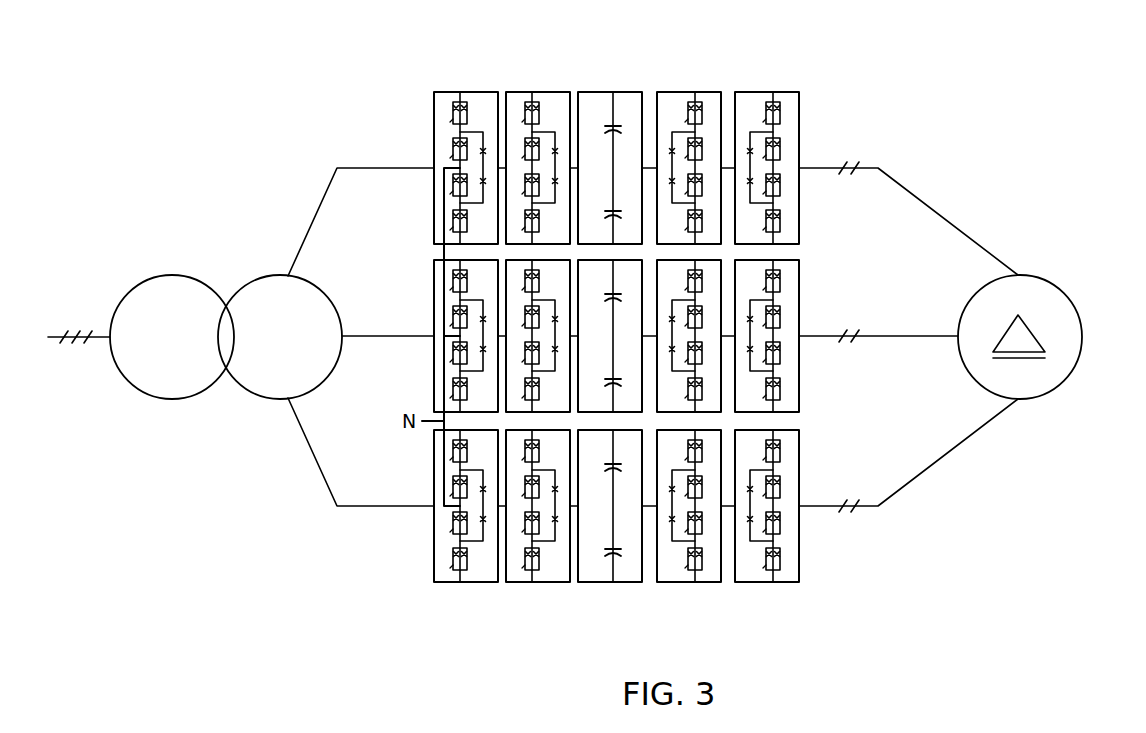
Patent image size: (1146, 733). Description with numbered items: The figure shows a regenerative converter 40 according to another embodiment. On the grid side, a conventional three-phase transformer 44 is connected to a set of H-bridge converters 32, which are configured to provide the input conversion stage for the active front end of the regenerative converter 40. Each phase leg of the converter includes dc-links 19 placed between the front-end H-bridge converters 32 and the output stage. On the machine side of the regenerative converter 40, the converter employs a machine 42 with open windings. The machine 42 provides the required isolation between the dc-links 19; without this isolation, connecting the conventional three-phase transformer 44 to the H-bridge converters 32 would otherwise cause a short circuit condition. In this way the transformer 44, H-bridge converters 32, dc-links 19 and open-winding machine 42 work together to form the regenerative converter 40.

The three-phase transformer 44 is at (221, 272).
The regenerative converter 40 is at (584, 33).
The H-bridge converter 32 is at (476, 78).
The dc-link 19 is at (615, 73).
The machine 42 is at (1065, 270).